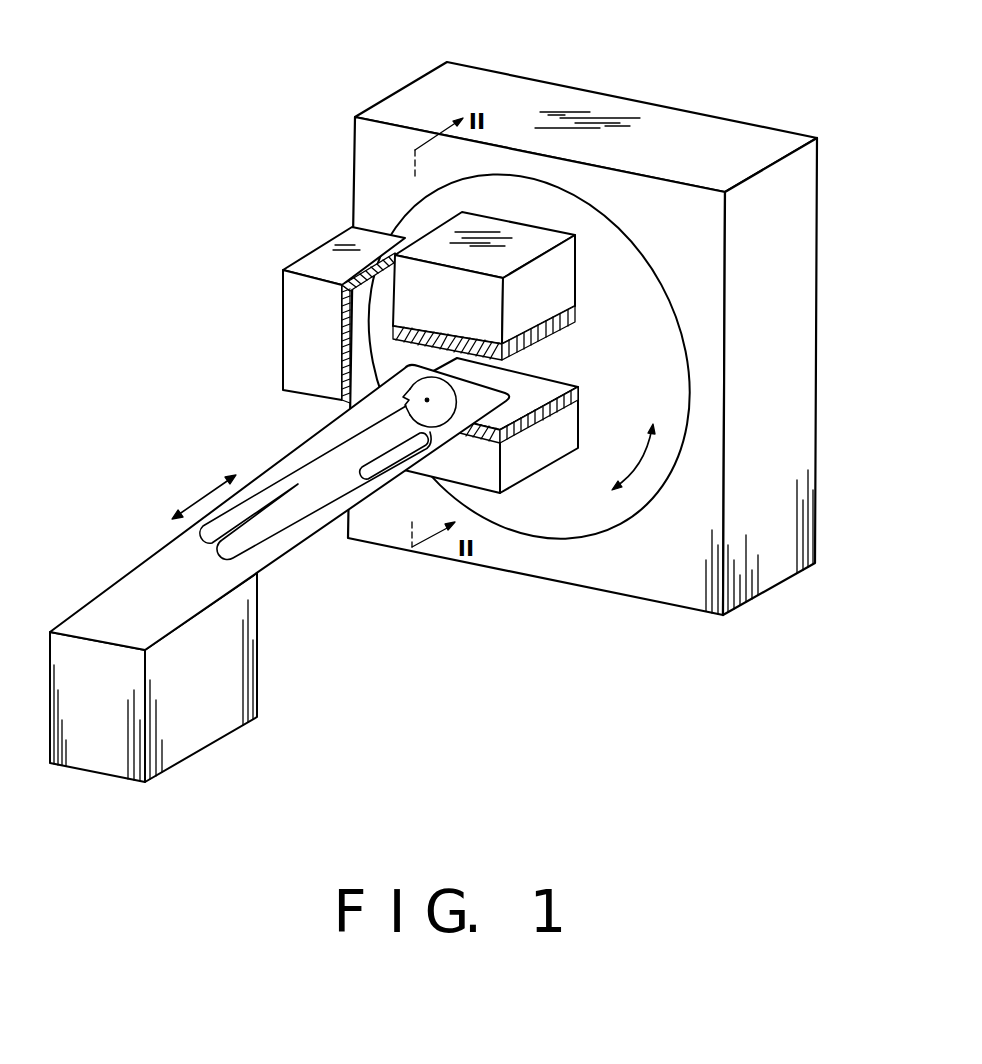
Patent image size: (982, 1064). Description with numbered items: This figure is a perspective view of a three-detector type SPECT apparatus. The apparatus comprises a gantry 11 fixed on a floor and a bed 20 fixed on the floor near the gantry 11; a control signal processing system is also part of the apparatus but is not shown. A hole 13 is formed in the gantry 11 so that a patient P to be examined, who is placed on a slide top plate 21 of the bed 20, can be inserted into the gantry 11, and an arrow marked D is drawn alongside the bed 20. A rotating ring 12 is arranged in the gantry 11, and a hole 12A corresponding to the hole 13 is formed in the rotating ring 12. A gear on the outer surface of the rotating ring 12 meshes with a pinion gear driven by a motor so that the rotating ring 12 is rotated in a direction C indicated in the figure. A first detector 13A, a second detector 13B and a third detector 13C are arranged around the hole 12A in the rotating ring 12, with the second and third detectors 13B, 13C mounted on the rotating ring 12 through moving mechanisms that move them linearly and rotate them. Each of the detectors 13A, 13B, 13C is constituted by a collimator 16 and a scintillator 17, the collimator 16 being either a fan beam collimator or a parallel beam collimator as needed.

The gantry 11 is at (678, 583).
The rotating ring 12 is at (665, 358).
The hole 12A is at (716, 211).
The hole 13 is at (567, 333).
The first detector 13A is at (283, 317).
The second detector 13B is at (538, 467).
The third detector 13C is at (505, 233).
The collimator 16 is at (597, 342).
The scintillator 17 is at (560, 278).
The bed 20 is at (272, 689).
The slide top plate 21 is at (277, 553).
The patient P is at (340, 470).
The direction D is at (203, 497).
The rotation direction C is at (640, 460).